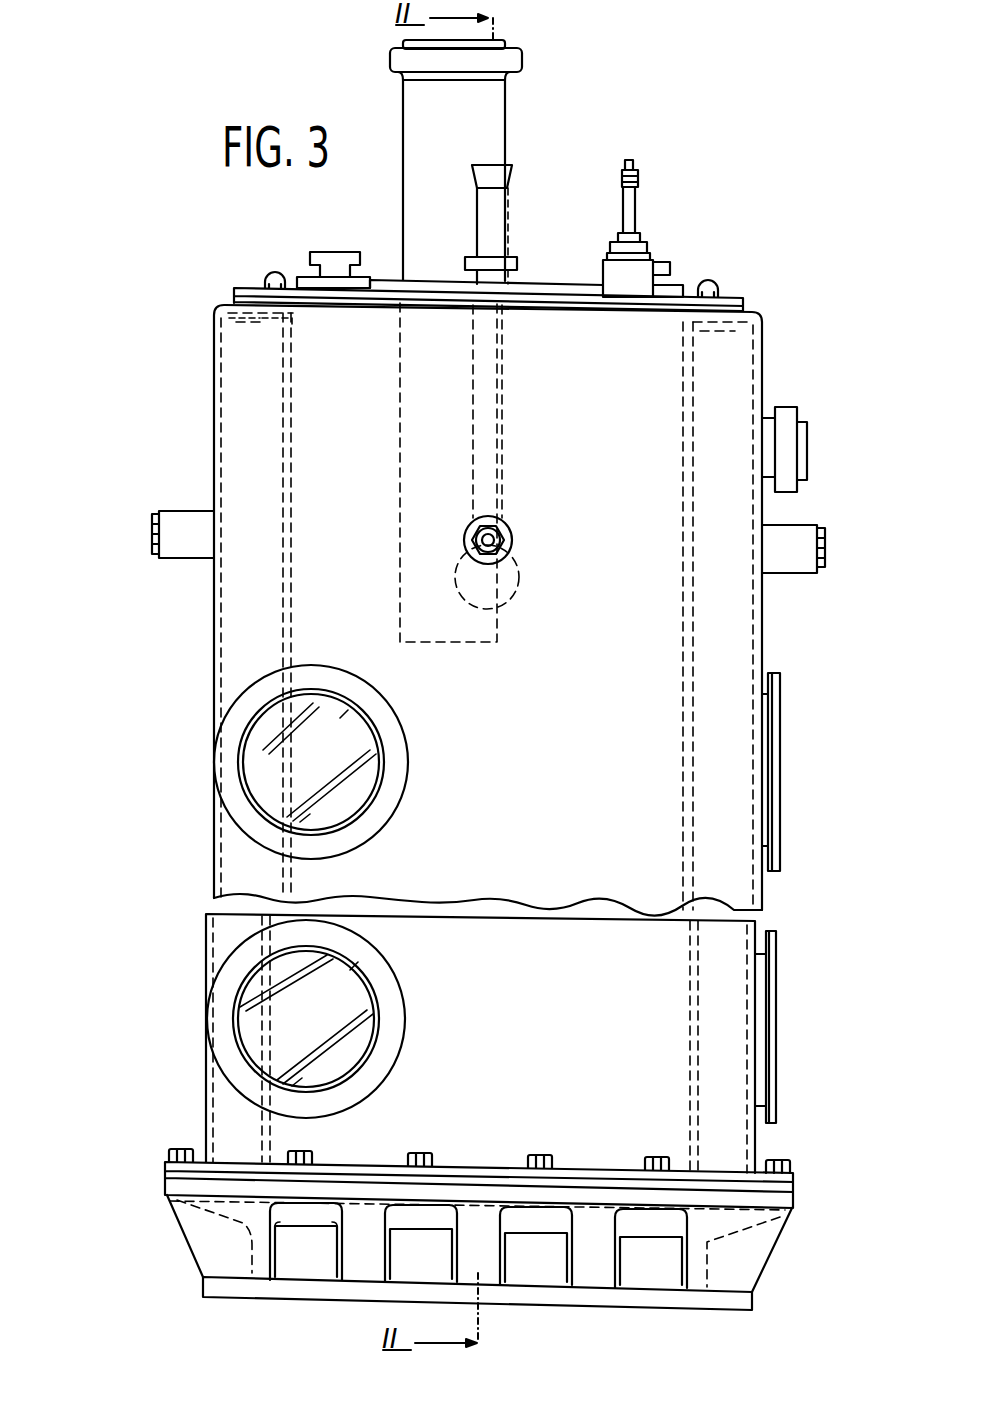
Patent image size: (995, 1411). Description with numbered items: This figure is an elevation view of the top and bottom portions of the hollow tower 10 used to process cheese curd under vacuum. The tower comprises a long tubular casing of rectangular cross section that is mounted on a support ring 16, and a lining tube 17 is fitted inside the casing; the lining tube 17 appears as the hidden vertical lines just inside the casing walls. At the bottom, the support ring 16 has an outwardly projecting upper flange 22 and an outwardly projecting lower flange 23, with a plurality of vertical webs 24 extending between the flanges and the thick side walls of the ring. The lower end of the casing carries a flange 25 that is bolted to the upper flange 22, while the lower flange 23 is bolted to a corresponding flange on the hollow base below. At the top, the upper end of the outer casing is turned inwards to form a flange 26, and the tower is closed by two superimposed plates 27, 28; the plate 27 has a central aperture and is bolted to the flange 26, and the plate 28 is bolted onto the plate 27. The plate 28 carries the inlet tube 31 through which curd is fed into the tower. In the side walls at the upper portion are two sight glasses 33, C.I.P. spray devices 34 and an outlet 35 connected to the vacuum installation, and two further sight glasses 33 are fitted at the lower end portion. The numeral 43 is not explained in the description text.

The hollow tower 10 is at (762, 637).
The support ring 16 is at (175, 1220).
The lining tube 17 is at (294, 440).
The upper flange 22 is at (165, 1183).
The lower flange 23 is at (222, 1288).
The vertical web 24 is at (222, 1238).
The flange 25 is at (167, 1167).
The flange 26 is at (239, 314).
The plate 27 is at (730, 293).
The plate 28 is at (550, 286).
The inlet tube 31 is at (505, 130).
The sight glass 33 is at (263, 750).
The C.I.P. spray device 34 is at (181, 522).
The outlet 35 is at (795, 407).
The lip 43 is at (270, 323).